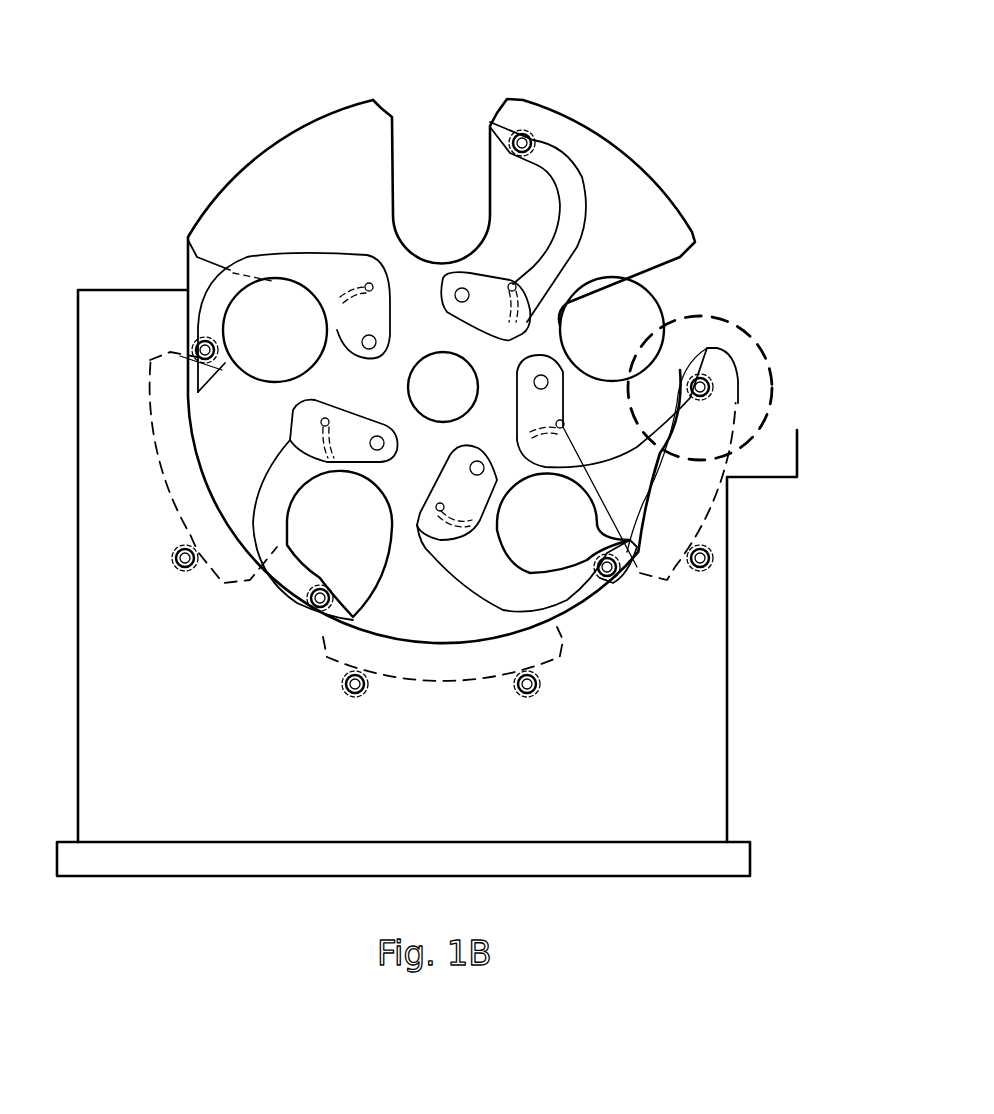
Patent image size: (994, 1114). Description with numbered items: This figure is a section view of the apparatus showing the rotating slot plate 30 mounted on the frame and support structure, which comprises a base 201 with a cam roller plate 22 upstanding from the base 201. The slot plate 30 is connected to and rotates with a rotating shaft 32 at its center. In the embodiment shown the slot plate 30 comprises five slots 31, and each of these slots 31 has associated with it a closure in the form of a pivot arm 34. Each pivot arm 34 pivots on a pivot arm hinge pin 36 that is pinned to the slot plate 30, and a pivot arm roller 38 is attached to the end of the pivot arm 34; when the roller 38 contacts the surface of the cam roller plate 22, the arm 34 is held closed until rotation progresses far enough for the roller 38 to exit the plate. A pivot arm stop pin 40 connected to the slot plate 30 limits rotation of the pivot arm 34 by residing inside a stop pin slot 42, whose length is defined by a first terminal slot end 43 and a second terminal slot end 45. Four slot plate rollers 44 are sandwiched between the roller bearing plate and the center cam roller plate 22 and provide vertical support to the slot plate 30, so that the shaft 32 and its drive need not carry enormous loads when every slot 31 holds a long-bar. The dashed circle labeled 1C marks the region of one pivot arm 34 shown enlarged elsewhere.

The detail view circle 1C is at (765, 356).
The cam roller plate 22 is at (133, 287).
The rotating slot plate 30 is at (262, 148).
The slots 31 is at (490, 160).
The rotating shaft 32 is at (480, 375).
The pivot arm 34 is at (580, 180).
The pivot arm hinge pin 36 is at (462, 293).
The pivot arm roller 38 is at (527, 137).
The pivot arm stop pin 40 is at (558, 447).
The stop pin slot 42 is at (520, 465).
The first terminal slot end 43 is at (283, 253).
The slot plate rollers 44 is at (708, 570).
The second terminal slot end 45 is at (367, 283).
The base 201 is at (750, 858).